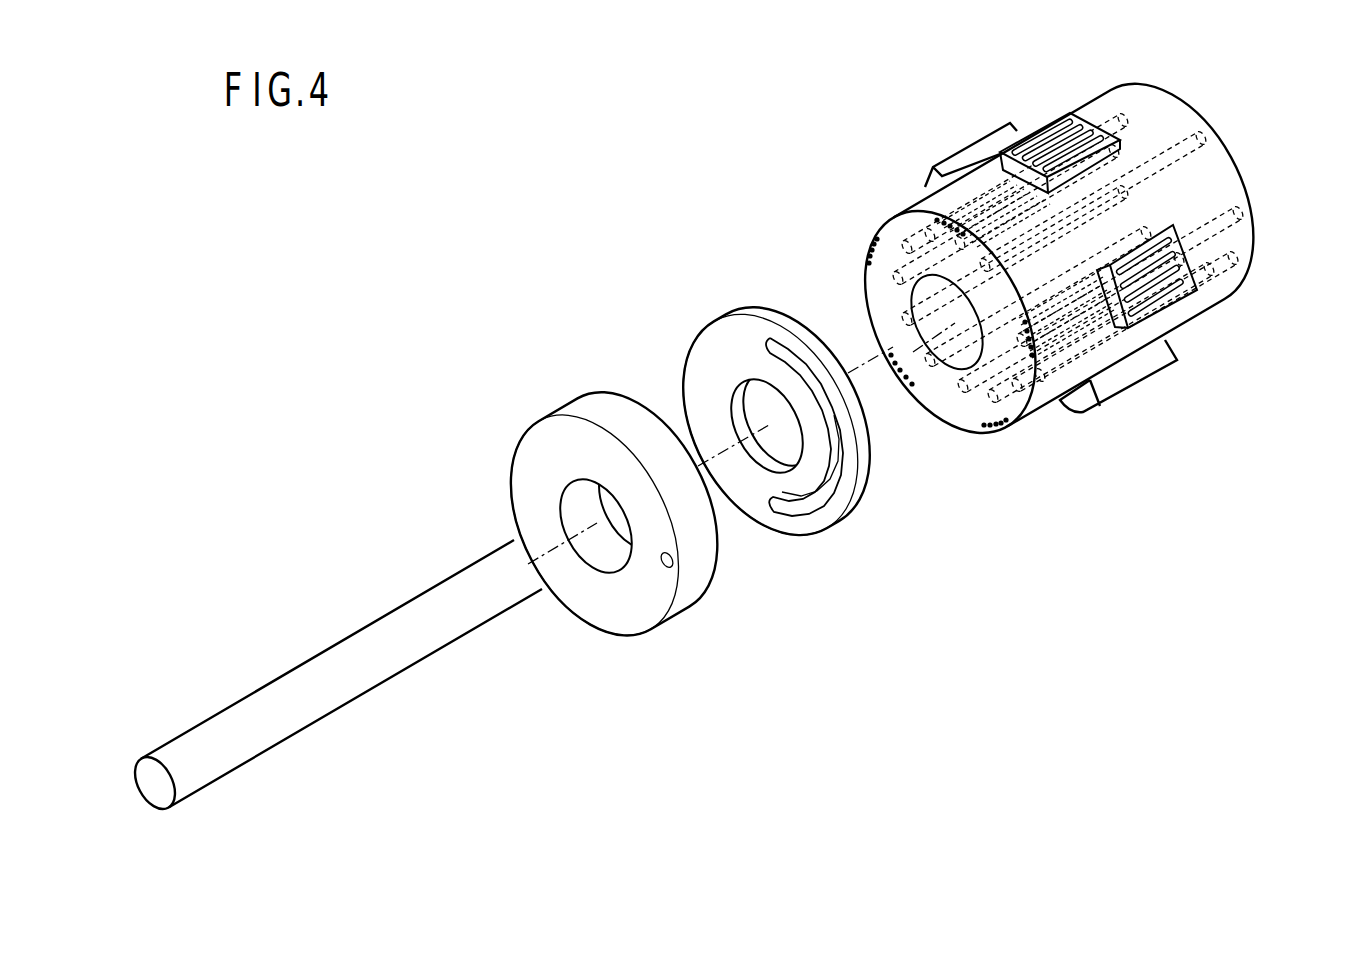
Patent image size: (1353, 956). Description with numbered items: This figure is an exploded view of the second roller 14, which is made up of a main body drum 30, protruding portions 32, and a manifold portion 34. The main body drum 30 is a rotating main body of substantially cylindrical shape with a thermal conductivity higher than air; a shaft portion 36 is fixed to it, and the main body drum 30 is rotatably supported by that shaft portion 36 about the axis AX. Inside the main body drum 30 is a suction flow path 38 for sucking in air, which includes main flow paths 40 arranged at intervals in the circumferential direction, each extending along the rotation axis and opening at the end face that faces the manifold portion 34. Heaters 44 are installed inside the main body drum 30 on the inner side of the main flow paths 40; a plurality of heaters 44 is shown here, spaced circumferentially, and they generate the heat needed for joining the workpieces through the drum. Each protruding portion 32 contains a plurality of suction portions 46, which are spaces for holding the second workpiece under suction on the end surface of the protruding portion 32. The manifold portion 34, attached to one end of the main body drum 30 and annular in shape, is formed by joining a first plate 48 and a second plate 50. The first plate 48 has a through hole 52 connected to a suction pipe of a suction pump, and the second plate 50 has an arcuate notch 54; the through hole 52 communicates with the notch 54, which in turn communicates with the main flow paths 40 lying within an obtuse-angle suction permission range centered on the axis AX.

The second roller 14 is at (327, 276).
The main body drum 30 is at (1240, 232).
The protruding portion 32 is at (1040, 122).
The manifold portion 34 is at (625, 297).
The shaft portion 36 is at (350, 667).
The suction flow path 38 is at (957, 197).
The main flow path 40 is at (936, 221).
The heater 44 is at (958, 395).
The suction portion 46 is at (1043, 135).
The first plate 48 is at (571, 409).
The second plate 50 is at (705, 345).
The through hole 52 is at (673, 562).
The notch 54 is at (805, 524).
The axis AX is at (150, 786).